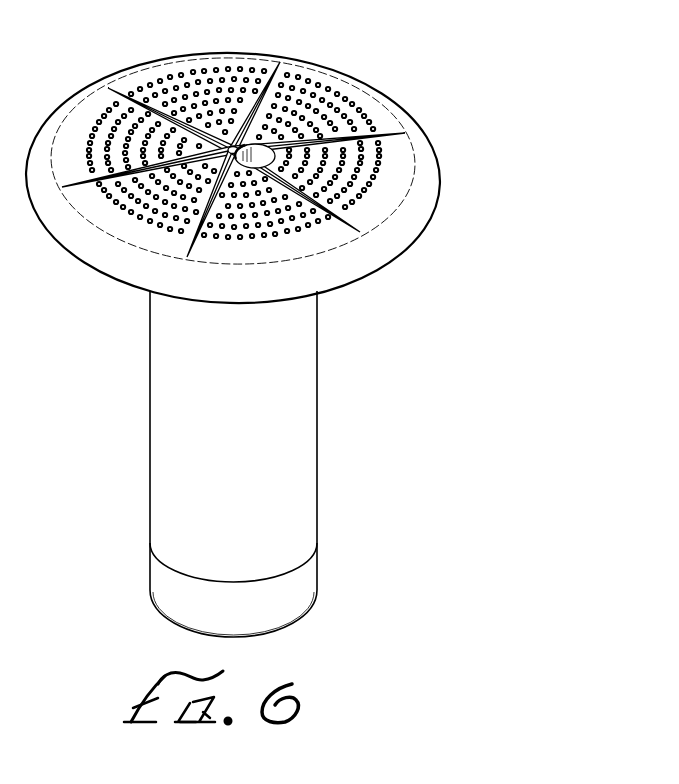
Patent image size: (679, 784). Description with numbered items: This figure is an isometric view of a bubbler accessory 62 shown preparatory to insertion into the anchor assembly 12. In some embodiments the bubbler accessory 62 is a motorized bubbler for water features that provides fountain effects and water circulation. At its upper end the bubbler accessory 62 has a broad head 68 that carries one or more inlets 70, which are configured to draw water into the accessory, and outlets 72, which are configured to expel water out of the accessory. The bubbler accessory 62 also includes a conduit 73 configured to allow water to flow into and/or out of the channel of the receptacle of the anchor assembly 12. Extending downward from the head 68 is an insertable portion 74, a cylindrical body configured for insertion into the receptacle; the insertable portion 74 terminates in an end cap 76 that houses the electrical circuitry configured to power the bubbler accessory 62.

The anchor assembly 12 is at (5, 452).
The bubbler accessory 62 is at (422, 183).
The head 68 is at (83, 125).
The inlets 70 is at (323, 90).
The outlets 72 is at (257, 163).
The conduit 73 is at (356, 218).
The insertable portion 74 is at (336, 607).
The end cap 76 is at (139, 539).